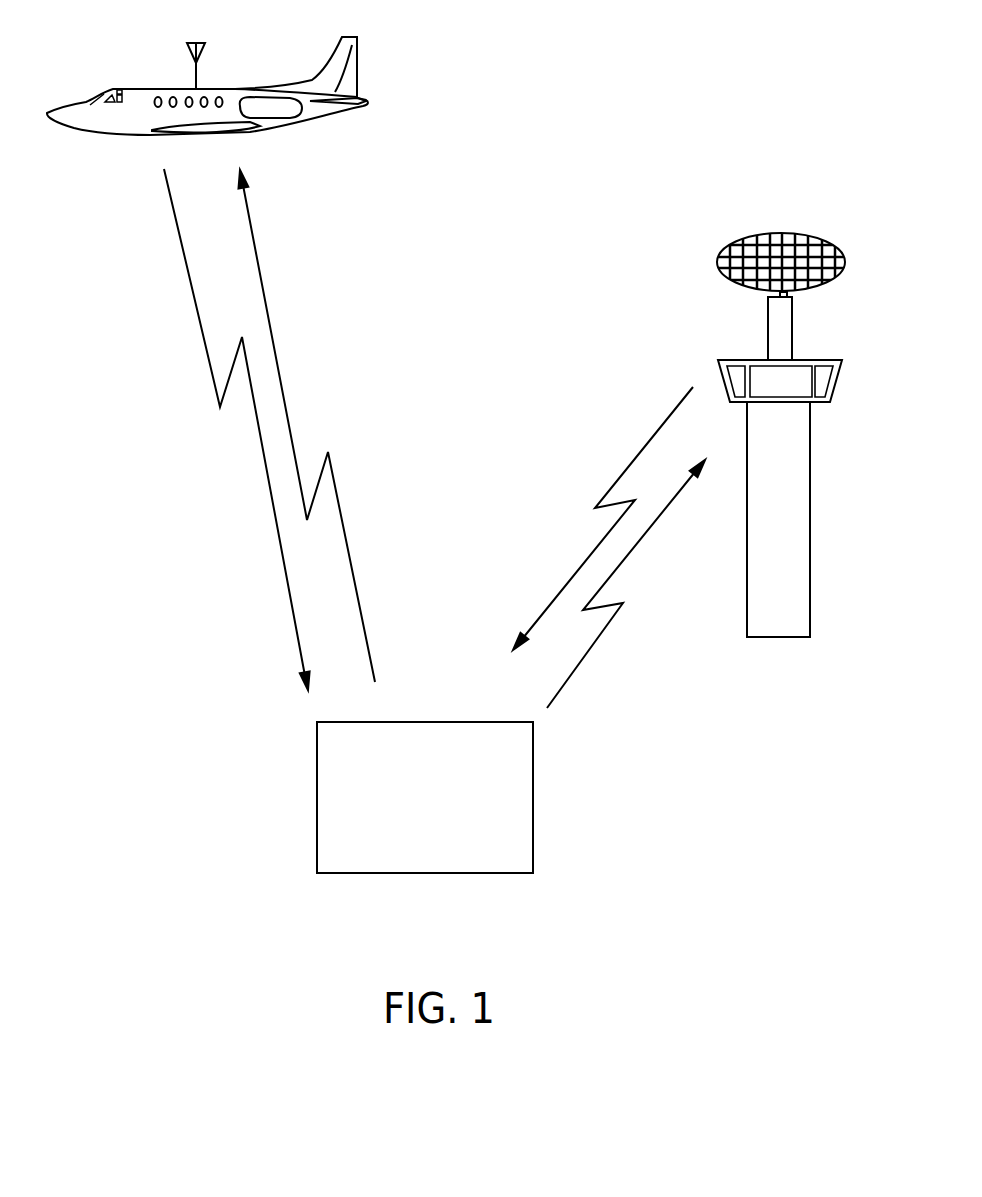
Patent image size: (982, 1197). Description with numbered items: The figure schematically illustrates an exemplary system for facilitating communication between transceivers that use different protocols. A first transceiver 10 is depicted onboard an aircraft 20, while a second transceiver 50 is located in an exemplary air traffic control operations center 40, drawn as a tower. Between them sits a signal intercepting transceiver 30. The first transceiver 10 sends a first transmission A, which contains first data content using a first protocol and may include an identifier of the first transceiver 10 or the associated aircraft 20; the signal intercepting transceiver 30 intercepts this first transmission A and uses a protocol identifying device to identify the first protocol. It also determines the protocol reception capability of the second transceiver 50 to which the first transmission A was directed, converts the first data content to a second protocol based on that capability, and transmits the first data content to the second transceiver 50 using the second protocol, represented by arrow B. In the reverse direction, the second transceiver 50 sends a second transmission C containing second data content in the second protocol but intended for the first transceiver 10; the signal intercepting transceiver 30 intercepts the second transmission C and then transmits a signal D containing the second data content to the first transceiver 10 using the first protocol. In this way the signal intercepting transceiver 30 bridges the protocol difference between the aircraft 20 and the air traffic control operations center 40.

The first transceiver 10 is at (206, 47).
The aircraft 20 is at (358, 73).
The signal intercepting transceiver 30 is at (534, 795).
The air traffic control operations center 40 is at (811, 468).
The second transceiver 50 is at (841, 249).
The first transmission A is at (259, 455).
The transmission of first data content using second protocol B is at (644, 535).
The second transmission C is at (563, 587).
The signal containing second data content using first protocol D is at (263, 288).